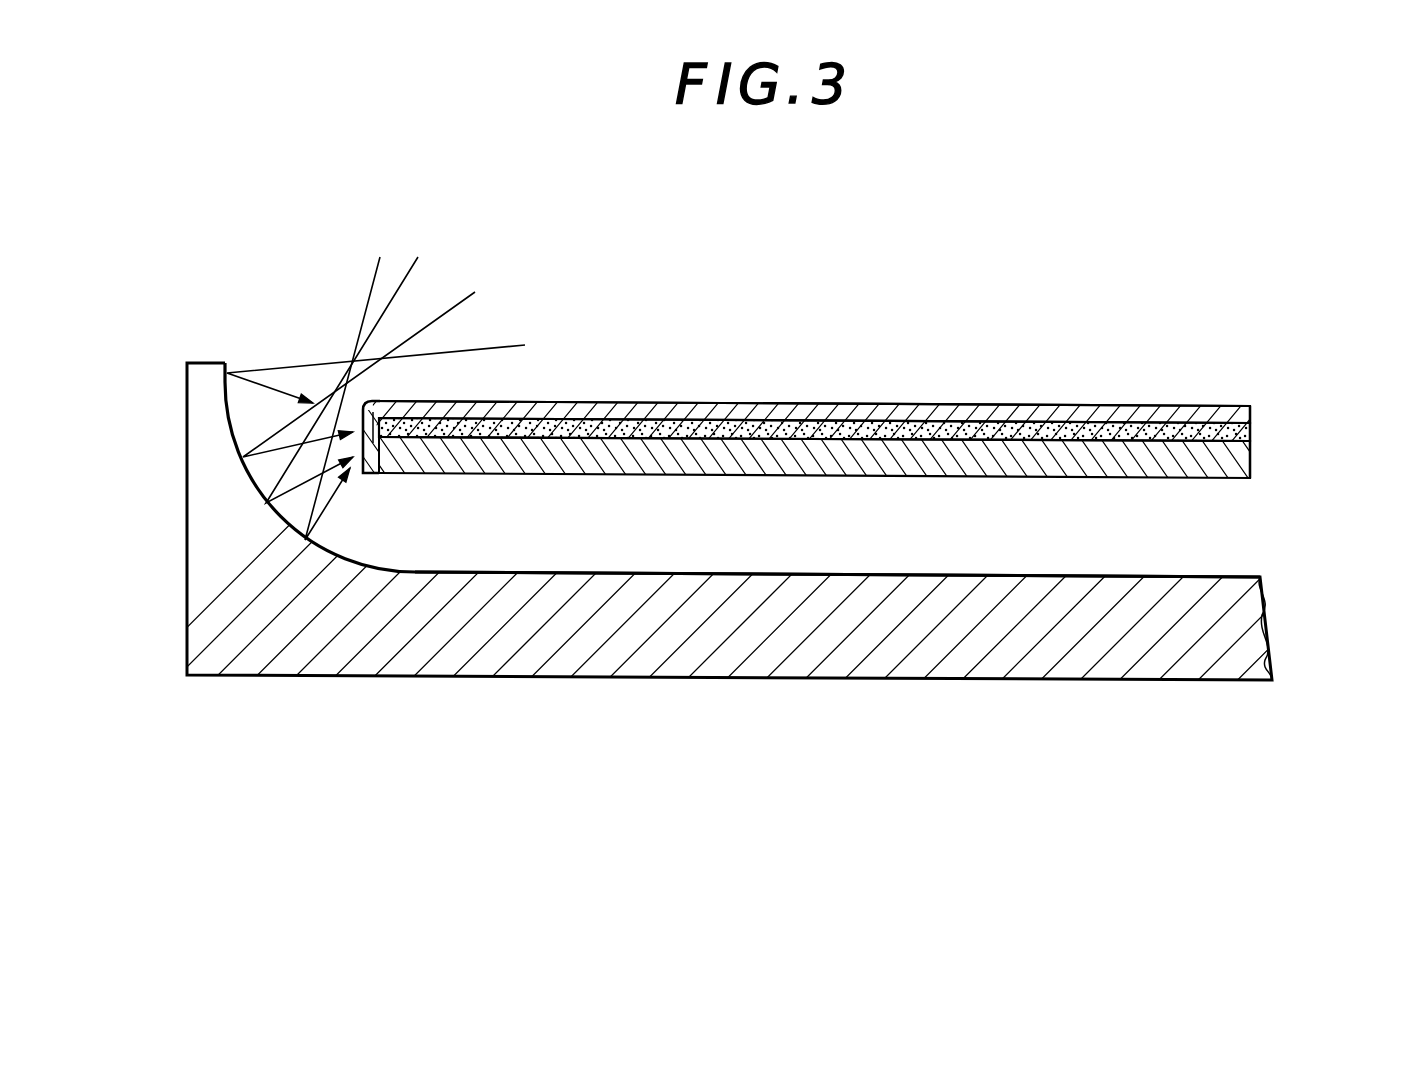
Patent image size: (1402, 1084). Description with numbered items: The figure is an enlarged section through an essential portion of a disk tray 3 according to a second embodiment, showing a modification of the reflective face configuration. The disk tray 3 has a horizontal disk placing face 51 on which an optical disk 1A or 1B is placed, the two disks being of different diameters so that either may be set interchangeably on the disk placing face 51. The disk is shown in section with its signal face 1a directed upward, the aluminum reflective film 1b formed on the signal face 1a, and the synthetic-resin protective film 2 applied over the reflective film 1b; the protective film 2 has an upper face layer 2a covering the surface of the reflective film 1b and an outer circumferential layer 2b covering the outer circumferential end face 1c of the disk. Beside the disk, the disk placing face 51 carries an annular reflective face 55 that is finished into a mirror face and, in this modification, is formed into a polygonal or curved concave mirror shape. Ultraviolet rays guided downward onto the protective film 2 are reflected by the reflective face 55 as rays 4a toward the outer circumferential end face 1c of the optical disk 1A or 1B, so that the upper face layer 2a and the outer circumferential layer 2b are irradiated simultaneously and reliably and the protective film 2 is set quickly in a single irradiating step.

The optical disk 1A is at (1225, 458).
The optical disk 1B is at (1318, 469).
The signal face 1a is at (1175, 422).
The reflective film 1b is at (1058, 422).
The outer circumferential end face 1c is at (405, 475).
The protective film 2 is at (712, 401).
The upper face layer 2a is at (628, 401).
The outer circumferential layer 2b is at (374, 415).
The disk tray 3 is at (593, 645).
The reflected rays 4a is at (300, 455).
The disk placing face 51 is at (866, 577).
The reflective face 55 is at (252, 476).